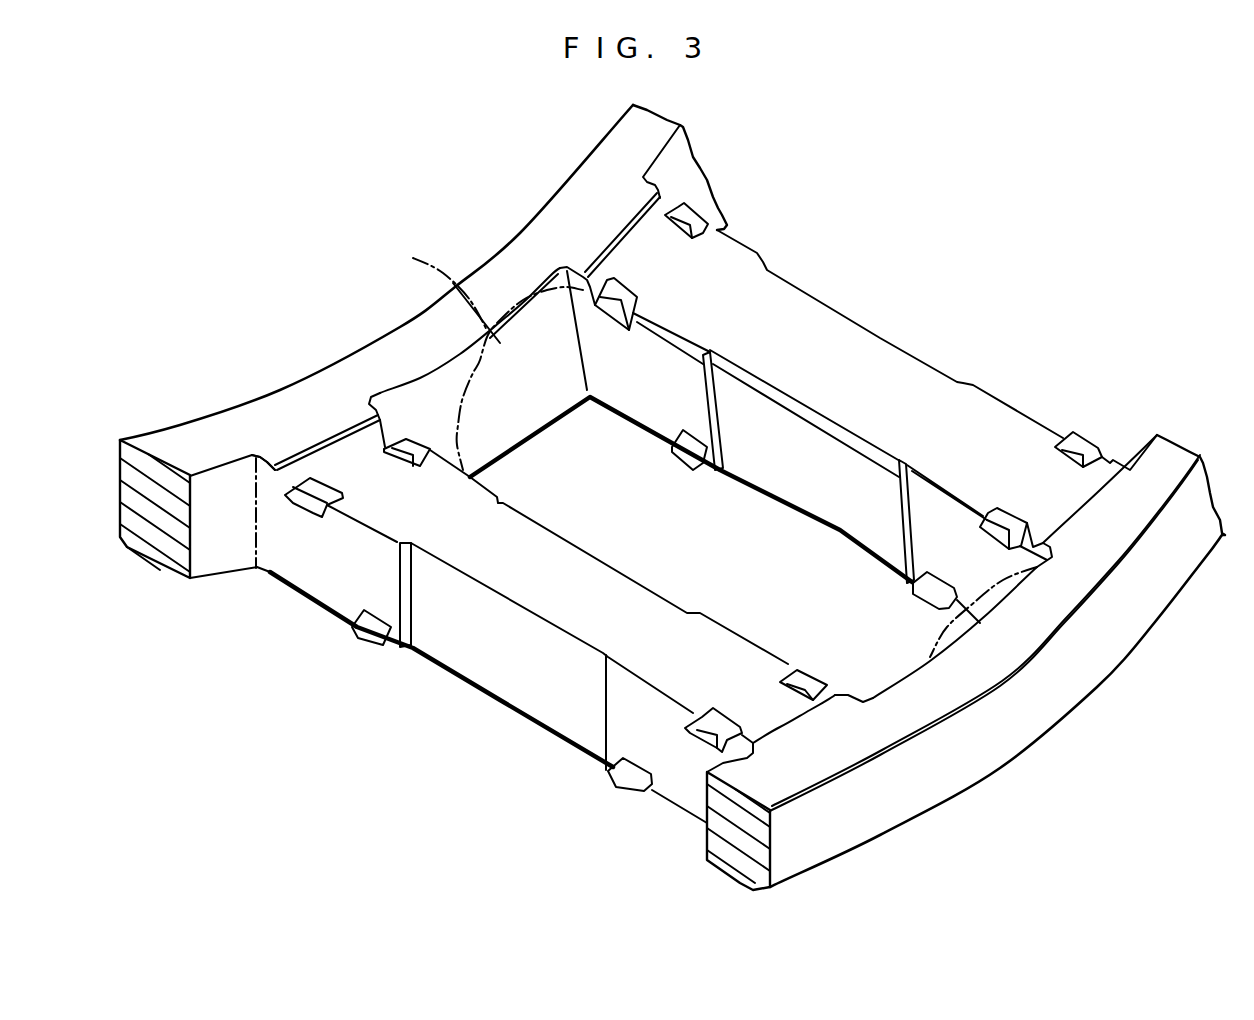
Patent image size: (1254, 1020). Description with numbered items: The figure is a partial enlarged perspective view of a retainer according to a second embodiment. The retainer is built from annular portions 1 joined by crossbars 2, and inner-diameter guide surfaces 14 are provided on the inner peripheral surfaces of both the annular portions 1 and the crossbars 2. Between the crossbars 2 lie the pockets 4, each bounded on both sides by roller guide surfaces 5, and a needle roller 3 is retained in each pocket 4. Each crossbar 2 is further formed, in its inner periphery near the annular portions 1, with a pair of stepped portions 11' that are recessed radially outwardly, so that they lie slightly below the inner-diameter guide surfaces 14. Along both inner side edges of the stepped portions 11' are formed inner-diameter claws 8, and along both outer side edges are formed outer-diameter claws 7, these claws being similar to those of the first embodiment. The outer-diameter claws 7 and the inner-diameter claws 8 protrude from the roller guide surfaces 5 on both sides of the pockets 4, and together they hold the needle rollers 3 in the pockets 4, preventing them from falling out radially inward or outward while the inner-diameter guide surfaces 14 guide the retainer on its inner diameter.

The annular portion 1 is at (513, 240).
The crossbar 2 is at (813, 525).
The needle roller 3 is at (712, 448).
The pocket 4 is at (427, 398).
The roller guide surface 5 is at (650, 383).
The outer-diameter claw 7 is at (697, 447).
The inner-diameter claw 8 is at (598, 307).
The stepped portion 11' is at (436, 372).
The inner-diameter guide surface 14 is at (600, 197).